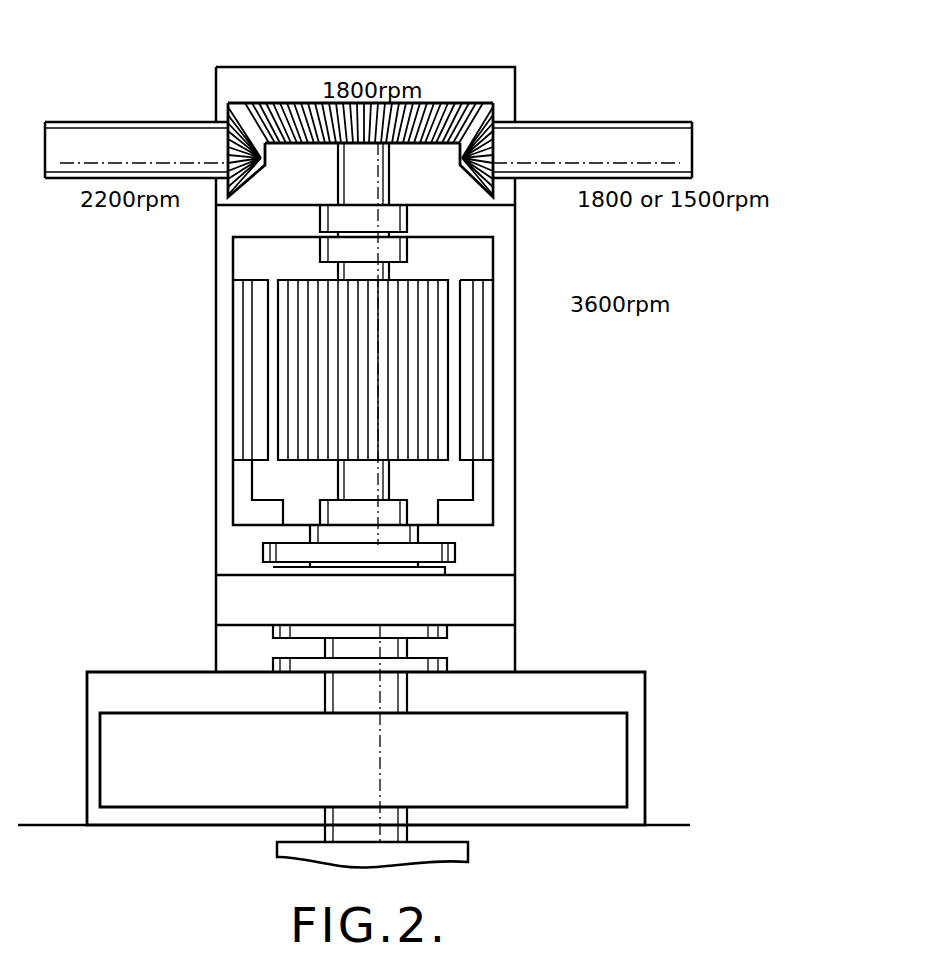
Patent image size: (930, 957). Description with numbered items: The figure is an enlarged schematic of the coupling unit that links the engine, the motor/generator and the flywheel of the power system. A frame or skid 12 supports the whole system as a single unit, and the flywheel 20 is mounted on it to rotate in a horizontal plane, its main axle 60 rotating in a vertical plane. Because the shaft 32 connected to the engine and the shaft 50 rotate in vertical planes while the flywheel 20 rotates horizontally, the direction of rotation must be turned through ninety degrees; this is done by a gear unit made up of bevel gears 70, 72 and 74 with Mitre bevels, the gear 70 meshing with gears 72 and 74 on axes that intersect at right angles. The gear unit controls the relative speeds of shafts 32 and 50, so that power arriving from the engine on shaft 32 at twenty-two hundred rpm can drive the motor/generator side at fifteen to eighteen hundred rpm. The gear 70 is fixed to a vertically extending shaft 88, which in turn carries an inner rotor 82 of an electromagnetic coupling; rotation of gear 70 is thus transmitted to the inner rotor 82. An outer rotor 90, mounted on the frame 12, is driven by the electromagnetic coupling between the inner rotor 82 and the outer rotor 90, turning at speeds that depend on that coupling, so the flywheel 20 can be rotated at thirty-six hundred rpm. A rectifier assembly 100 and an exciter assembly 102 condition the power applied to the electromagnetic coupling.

The frame or skid 12 is at (646, 766).
The flywheel 20 is at (570, 782).
The shaft 32 is at (132, 122).
The shaft 50 is at (624, 135).
The main axle 60 is at (407, 648).
The gear 70 is at (442, 103).
The gear 72 is at (255, 142).
The gear 74 is at (493, 133).
The inner rotor 82 is at (328, 350).
The vertically extending shaft 88 is at (372, 181).
The outer rotor 90 is at (478, 398).
The rectifier assembly 100 is at (457, 543).
The exciter assembly 102 is at (228, 594).